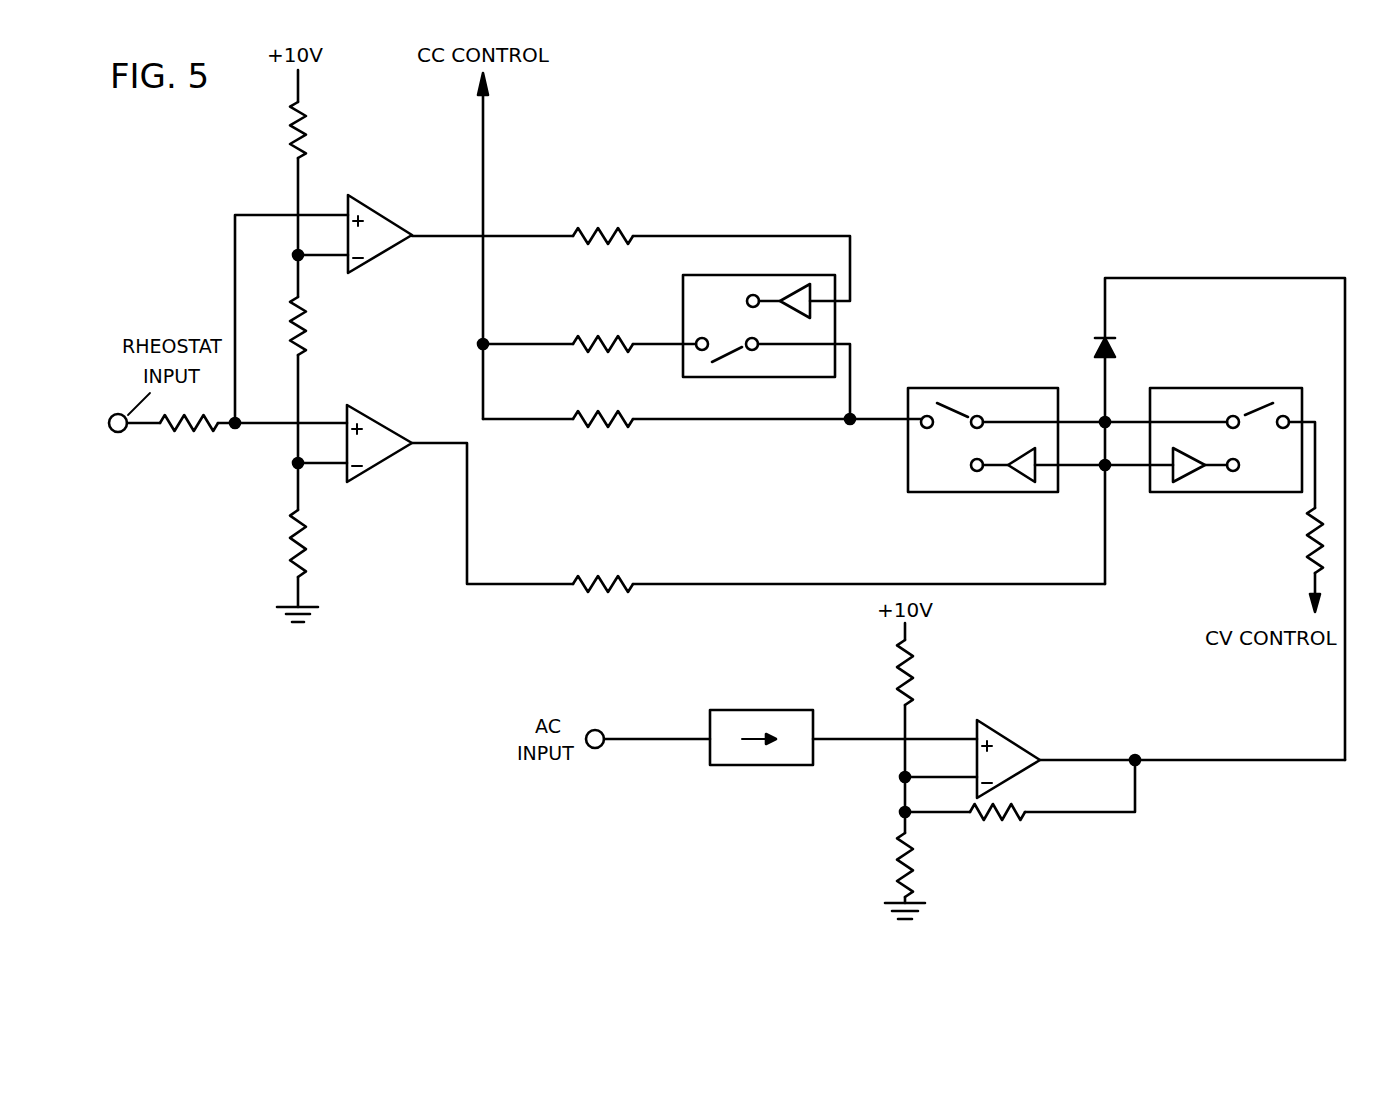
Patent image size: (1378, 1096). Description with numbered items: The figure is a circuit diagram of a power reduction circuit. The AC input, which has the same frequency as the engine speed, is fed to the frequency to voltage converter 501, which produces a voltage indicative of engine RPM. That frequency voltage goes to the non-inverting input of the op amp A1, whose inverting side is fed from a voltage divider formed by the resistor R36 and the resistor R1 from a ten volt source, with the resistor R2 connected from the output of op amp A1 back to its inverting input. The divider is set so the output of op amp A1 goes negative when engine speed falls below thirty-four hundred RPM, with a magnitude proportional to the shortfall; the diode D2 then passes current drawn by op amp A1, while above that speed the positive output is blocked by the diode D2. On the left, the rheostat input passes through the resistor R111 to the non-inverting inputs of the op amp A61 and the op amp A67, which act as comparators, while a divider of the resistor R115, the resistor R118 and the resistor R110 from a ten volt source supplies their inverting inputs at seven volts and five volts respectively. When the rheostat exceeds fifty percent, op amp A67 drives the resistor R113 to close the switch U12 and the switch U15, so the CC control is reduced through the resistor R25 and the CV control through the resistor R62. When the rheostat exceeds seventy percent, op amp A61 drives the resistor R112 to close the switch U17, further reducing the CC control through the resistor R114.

The resistor R115 is at (270, 130).
The resistor R118 is at (323, 326).
The resistor R110 is at (325, 543).
The resistor R111 is at (191, 439).
The op amp A61 is at (382, 212).
The op amp A67 is at (380, 422).
The resistor R112 is at (603, 223).
The resistor R114 is at (603, 332).
The resistor R25 is at (603, 435).
The resistor R113 is at (603, 571).
The switch U17 is at (758, 275).
The switch U12 is at (970, 388).
The switch U15 is at (1213, 388).
The diode D2 is at (1121, 351).
The resistor R62 is at (1293, 540).
The resistor R36 is at (927, 672).
The resistor R1 is at (889, 865).
The resistor R2 is at (997, 830).
The op amp A1 is at (1000, 733).
The frequency to voltage converter 501 is at (762, 710).